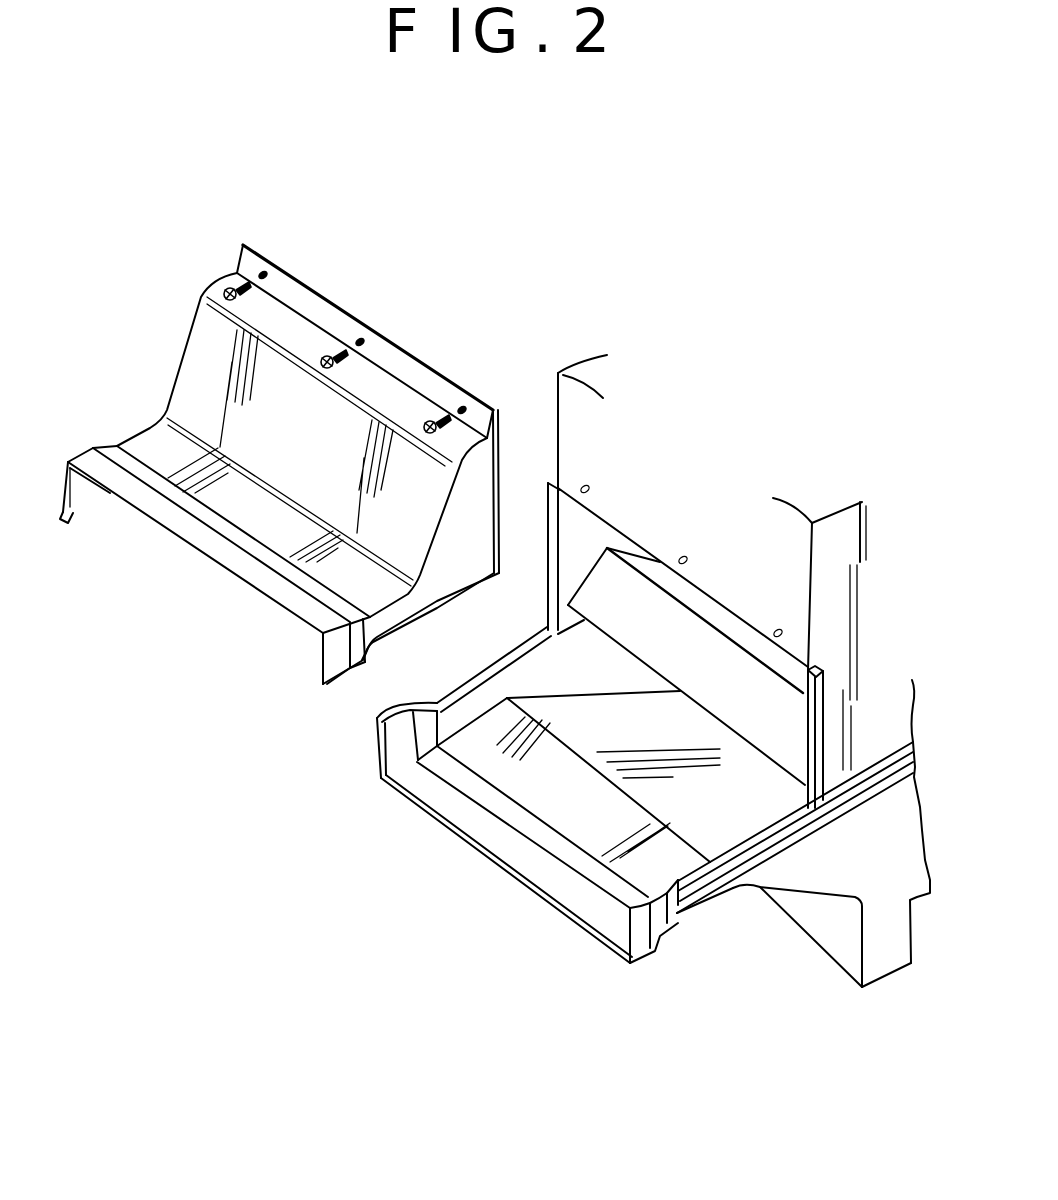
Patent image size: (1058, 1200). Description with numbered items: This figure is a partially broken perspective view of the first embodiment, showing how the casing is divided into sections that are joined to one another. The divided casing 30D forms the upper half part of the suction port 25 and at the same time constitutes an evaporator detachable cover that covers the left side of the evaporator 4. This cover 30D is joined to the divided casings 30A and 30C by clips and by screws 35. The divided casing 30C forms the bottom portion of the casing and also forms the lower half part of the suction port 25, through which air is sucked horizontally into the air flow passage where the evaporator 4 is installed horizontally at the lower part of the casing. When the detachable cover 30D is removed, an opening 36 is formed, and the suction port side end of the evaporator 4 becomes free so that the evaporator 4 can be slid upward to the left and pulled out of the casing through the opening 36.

The divided casing 30D is at (183, 356).
The screws 35 is at (325, 348).
The divided casing 30A is at (557, 412).
The opening 36 is at (588, 538).
The evaporator 4 is at (702, 642).
The suction port 25 is at (530, 868).
The divided casing 30C is at (720, 907).